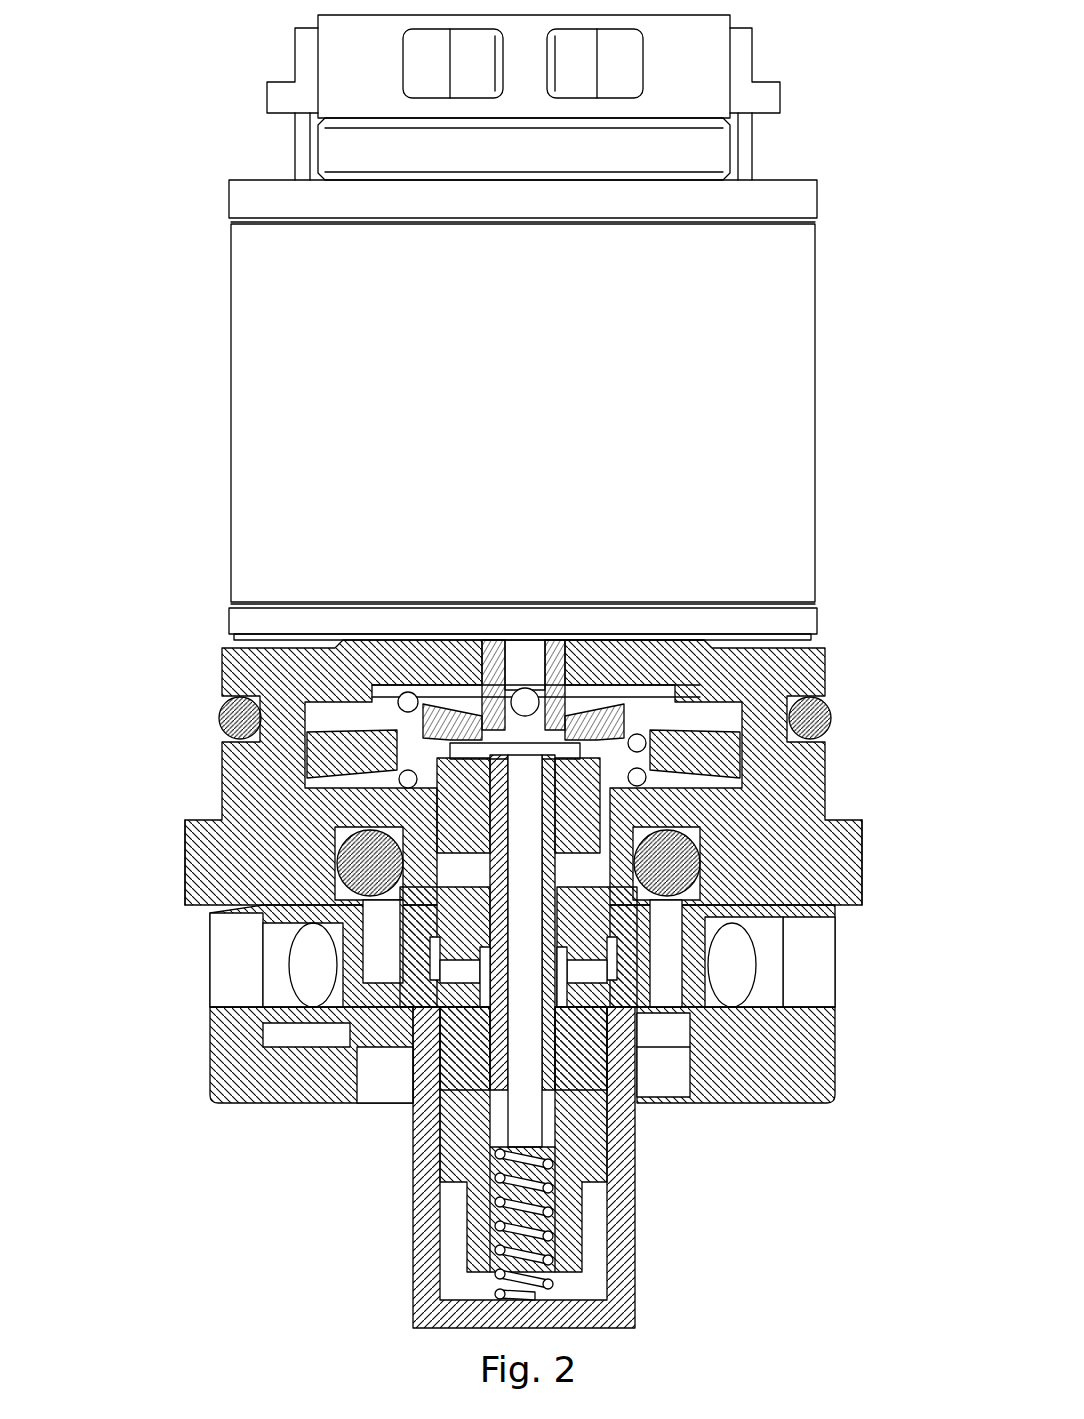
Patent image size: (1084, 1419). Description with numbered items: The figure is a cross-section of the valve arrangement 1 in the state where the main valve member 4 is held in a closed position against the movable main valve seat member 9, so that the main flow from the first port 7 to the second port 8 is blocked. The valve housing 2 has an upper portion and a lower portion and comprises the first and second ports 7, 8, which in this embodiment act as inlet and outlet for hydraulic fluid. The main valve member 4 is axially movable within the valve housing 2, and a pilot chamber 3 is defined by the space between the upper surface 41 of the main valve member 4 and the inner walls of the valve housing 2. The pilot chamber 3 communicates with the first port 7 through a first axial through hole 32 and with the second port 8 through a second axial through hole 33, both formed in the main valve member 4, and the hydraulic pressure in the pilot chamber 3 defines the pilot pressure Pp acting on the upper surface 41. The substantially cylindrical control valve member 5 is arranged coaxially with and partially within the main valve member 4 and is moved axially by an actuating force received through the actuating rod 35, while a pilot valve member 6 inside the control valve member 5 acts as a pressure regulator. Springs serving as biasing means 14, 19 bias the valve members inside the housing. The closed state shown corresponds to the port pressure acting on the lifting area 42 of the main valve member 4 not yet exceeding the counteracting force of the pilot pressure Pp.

The valve arrangement 1 is at (185, 355).
The valve housing 2 is at (242, 660).
The pilot chamber 3 is at (345, 718).
The main valve member 4 is at (375, 1025).
The control valve member 5 is at (595, 823).
The pilot valve member 6 is at (548, 800).
The first port 7 is at (655, 1082).
The second port 8 is at (822, 948).
The movable main valve seat member 9 is at (718, 1013).
The biasing means 14 is at (556, 1290).
The biasing means 19 is at (405, 778).
The first axial through hole 32 is at (668, 943).
The second axial through hole 33 is at (378, 918).
The actuating rod 35 is at (545, 652).
The upper surface 41 is at (702, 732).
The lifting area 42 is at (395, 1040).
The pilot pressure Pp is at (630, 692).